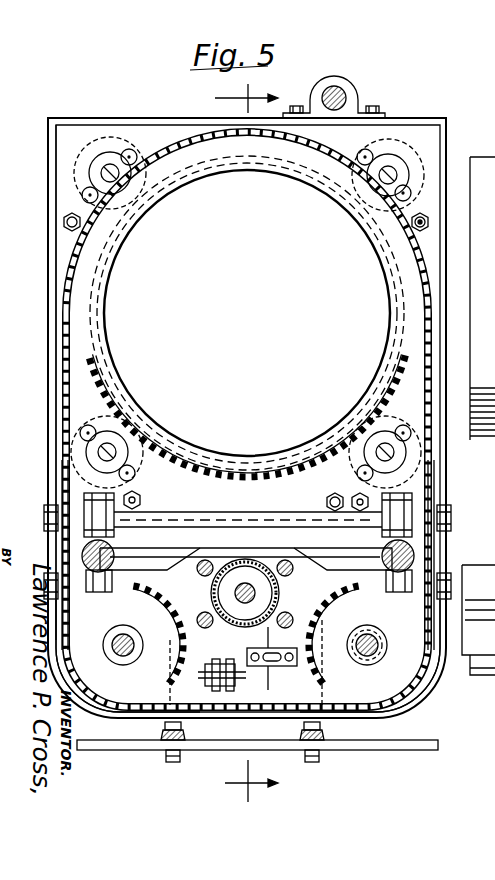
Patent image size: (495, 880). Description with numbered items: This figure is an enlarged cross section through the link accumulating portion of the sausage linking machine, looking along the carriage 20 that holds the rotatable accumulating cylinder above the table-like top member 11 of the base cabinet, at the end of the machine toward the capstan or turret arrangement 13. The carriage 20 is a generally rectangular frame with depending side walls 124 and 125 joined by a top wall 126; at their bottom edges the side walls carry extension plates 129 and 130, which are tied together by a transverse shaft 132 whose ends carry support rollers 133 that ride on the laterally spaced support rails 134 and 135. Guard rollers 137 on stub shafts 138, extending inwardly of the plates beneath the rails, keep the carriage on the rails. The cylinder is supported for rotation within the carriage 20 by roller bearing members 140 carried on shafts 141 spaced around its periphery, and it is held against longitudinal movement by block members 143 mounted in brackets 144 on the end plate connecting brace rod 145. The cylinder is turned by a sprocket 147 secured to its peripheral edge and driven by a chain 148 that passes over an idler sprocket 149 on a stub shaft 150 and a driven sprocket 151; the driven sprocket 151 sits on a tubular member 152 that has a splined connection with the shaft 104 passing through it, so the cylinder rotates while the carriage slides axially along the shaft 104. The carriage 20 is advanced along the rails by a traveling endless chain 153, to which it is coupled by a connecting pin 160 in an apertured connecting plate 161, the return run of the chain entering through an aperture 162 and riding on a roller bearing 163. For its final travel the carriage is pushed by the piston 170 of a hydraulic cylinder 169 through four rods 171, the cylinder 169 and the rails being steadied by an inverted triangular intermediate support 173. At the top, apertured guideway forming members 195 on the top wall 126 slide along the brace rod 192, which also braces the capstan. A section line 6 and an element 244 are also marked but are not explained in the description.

The section line 6- 6 is at (231, 443).
The top member 11 is at (378, 745).
The capstan or turret arrangement 13 is at (478, 342).
The carriage 20 is at (420, 118).
The shaft 104 is at (372, 648).
The side wall 124 is at (55, 255).
The side wall 125 is at (428, 226).
The top wall 126 is at (108, 117).
The extension plate 129 is at (72, 482).
The extension plate 130 is at (432, 476).
The shaft 132 is at (178, 513).
The support rollers 133 is at (85, 510).
The support rail 134 is at (94, 586).
The support rail 135 is at (385, 547).
The guard rollers 137 is at (120, 592).
The stub shafts 138 is at (82, 603).
The roller bearing members 140 is at (73, 172).
The shafts 141 is at (110, 173).
The block members 143 is at (402, 270).
The brackets 144 is at (372, 233).
The brace rod 145 is at (423, 222).
The sprocket 147 is at (160, 472).
The chain 148 is at (66, 390).
The idler sprocket 149 is at (112, 697).
The stub shaft 150 is at (117, 655).
The driven sprocket 151 is at (403, 692).
The tubular member 152 is at (367, 657).
The endless chain 153 is at (250, 666).
The connecting pin 160 is at (245, 593).
The connecting plate 161 is at (185, 640).
The aperture 162 is at (180, 620).
The roller bearing 163 is at (216, 690).
The hydraulic cylinder 169 is at (300, 548).
The piston 170 is at (245, 592).
The rods 171 is at (203, 571).
The intermediate support 173 is at (205, 545).
The brace rod 192 is at (340, 92).
The guideway forming members 195 is at (358, 86).
The stud 244 is at (335, 500).